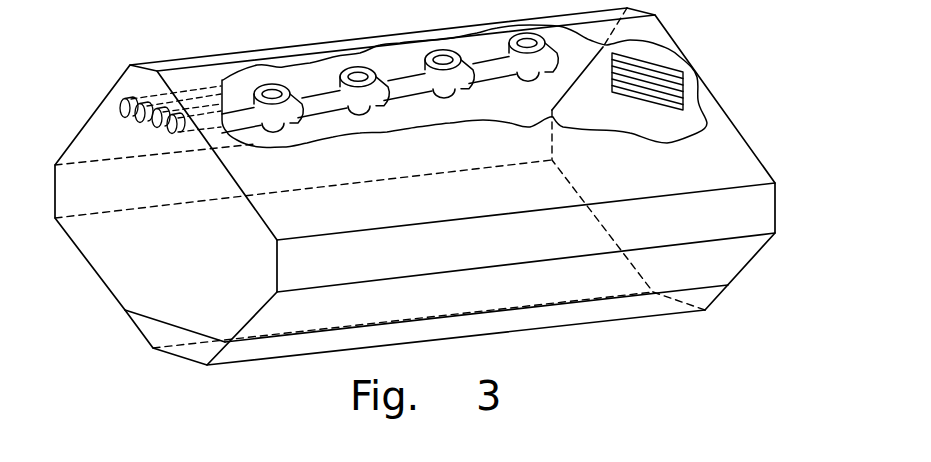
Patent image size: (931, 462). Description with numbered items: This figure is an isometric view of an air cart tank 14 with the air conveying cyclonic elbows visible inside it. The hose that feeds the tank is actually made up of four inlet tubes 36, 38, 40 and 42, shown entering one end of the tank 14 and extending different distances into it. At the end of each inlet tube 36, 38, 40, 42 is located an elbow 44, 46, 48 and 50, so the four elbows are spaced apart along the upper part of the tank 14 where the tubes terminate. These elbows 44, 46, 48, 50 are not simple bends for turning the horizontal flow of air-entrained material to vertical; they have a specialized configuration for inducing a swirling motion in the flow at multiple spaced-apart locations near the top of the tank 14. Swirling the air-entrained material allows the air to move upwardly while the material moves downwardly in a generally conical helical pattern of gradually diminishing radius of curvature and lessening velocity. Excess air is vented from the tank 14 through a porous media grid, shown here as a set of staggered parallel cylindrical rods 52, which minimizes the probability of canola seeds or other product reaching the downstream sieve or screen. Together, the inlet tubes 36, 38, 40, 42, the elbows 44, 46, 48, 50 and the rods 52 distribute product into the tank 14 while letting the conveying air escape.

The tank 14 is at (198, 279).
The inlet tube 36 is at (170, 135).
The inlet tube 38 is at (155, 129).
The inlet tube 40 is at (137, 122).
The inlet tube 42 is at (122, 100).
The elbow 44 is at (277, 133).
The elbow 46 is at (361, 116).
The elbow 48 is at (444, 98).
The elbow 50 is at (538, 82).
The staggered parallel cylindrical rods 52 is at (672, 93).